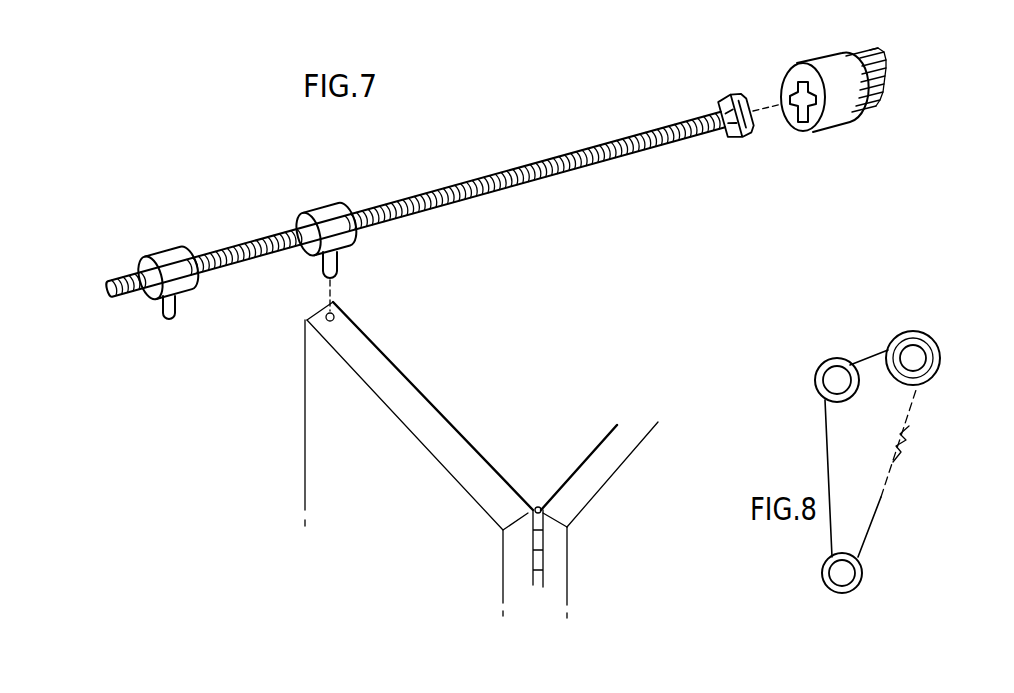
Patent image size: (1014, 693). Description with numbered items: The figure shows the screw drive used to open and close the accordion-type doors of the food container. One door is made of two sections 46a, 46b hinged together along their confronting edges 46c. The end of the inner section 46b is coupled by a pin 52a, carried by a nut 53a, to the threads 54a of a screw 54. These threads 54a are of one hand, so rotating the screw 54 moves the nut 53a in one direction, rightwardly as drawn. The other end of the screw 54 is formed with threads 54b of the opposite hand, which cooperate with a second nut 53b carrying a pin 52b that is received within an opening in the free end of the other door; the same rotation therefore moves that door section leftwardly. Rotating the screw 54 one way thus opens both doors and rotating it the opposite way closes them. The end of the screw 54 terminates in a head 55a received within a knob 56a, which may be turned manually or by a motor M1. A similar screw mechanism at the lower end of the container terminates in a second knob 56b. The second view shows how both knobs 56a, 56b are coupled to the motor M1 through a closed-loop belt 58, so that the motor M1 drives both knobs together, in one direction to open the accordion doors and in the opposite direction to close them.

In FIG. 7, the screw 54 is at (395, 194).
In FIG. 7, the threads 54a is at (554, 159).
In FIG. 7, the threads 54b is at (243, 266).
In FIG. 7, the nut 53a is at (323, 218).
In FIG. 7, the nut 53b is at (158, 257).
In FIG. 7, the pin 52a is at (335, 262).
In FIG. 7, the pin 52b is at (177, 308).
In FIG. 7, the head 55a is at (723, 103).
In FIG. 7, the knob 56a is at (820, 70).
In FIG. 8, the knob 56a is at (820, 372).
In FIG. 8, the knob 56b is at (840, 582).
In FIG. 7, the door section 46a is at (585, 477).
In FIG. 7, the inner door section 46b is at (423, 415).
In FIG. 7, the confronting edges 46c is at (537, 507).
In FIG. 8, the closed-loop belt 58 is at (825, 447).
In FIG. 8, the motor M1 is at (916, 332).